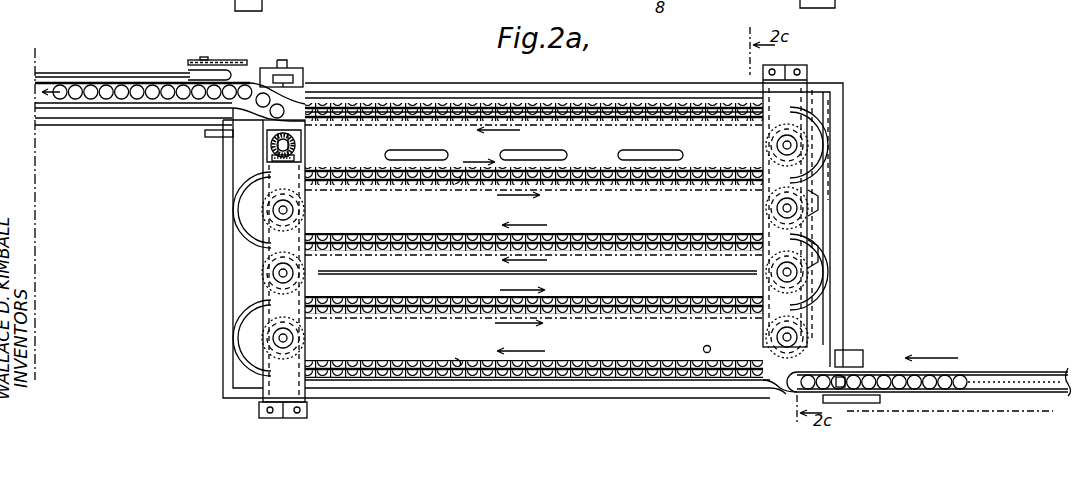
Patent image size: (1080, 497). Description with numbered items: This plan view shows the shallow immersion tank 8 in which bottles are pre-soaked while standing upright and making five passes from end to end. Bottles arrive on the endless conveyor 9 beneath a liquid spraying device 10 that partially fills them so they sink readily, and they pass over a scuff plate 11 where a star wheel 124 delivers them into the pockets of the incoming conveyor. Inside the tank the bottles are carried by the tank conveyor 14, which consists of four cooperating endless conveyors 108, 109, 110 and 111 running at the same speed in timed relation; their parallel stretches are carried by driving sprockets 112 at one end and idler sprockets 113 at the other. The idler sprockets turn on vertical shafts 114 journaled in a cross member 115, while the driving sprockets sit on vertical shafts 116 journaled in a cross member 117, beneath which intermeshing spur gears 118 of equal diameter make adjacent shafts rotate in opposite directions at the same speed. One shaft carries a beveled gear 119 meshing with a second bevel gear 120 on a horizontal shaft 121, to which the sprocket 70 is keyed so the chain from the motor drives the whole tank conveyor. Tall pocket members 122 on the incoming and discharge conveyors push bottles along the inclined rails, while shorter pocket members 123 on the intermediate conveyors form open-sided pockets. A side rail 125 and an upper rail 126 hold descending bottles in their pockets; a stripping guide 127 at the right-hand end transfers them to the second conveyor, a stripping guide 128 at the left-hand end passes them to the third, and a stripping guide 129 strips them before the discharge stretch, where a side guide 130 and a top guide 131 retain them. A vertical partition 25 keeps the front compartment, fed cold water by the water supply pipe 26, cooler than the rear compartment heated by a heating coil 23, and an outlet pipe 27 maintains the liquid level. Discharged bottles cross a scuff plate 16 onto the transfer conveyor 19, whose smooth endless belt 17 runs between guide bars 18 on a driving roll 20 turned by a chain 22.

The immersion tank 8 is at (585, 97).
The endless conveyor 9 is at (1040, 372).
The liquid spraying device 10 is at (983, 378).
The scuff plate 11 is at (820, 373).
The tank conveyor 14 is at (618, 134).
The scuff plate 16 is at (250, 80).
The endless belt 17 is at (51, 78).
The guide bars 18 is at (117, 78).
The transfer conveyor 19 is at (120, 118).
The driving roll 20 is at (187, 76).
The chain 22 is at (225, 52).
The heating coil 23 is at (530, 110).
The vertical partition 25 is at (462, 270).
The water supply pipe 26 is at (703, 349).
The outlet pipe 27 is at (203, 139).
The sprocket 70 is at (290, 62).
The incoming endless conveyor 108 is at (600, 359).
The intermediate endless conveyor 109 is at (663, 247).
The intermediate endless conveyor 110 is at (663, 193).
The discharge endless conveyor 111 is at (712, 121).
The driving sprockets 112 is at (308, 147).
The idler sprockets 113 is at (776, 150).
The vertical shafts 114 is at (783, 142).
The cross member 115 is at (802, 191).
The vertical shafts 116 is at (268, 147).
The cross member 117 is at (252, 384).
The intermeshing spur gears 118 is at (310, 153).
The beveled gear 119 is at (265, 153).
The second bevel gear 120 is at (263, 160).
The horizontal shaft 121 is at (300, 80).
The pocket members 122 is at (826, 143).
The pocket members 123 is at (812, 218).
The star wheel 124 is at (778, 393).
The side rail 125 is at (468, 381).
The upper rail 126 is at (460, 188).
The stripping guide 127 is at (832, 283).
The stripping guide 128 is at (240, 236).
The stripping guide 129 is at (822, 168).
The side guide 130 is at (387, 102).
The top guide 131 is at (428, 112).